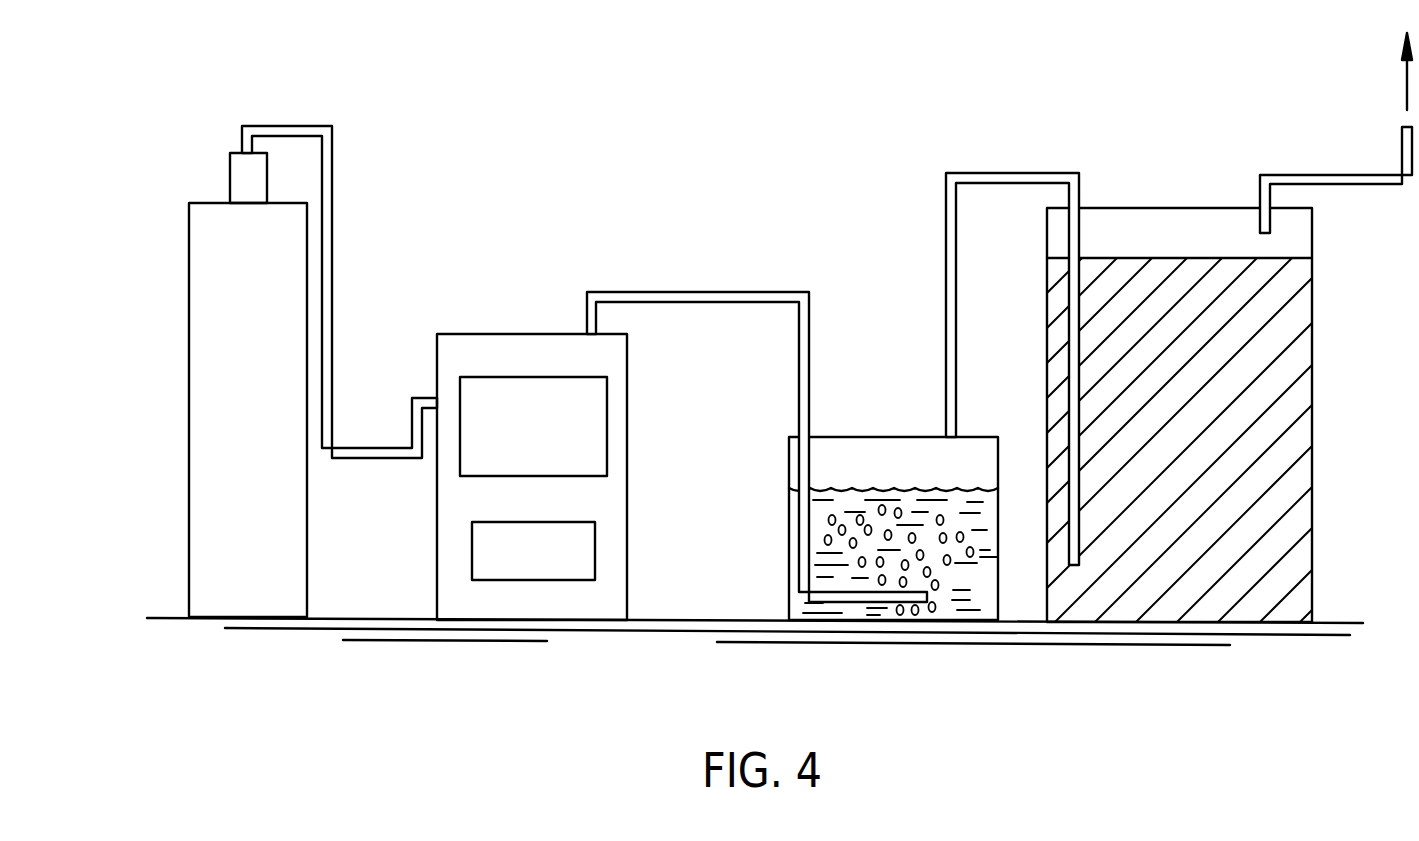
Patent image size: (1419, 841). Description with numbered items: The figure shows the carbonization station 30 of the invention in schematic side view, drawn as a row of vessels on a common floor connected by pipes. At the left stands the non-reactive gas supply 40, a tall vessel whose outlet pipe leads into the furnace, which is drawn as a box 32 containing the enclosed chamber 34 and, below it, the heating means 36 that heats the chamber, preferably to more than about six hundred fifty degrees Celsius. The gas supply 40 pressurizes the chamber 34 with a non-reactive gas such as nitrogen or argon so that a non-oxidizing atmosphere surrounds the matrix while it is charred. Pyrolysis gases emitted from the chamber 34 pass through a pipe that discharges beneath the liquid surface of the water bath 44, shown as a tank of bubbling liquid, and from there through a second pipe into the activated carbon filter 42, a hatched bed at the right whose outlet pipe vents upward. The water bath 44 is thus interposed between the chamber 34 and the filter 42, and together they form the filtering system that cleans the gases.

The carbonization station 30 is at (725, 262).
The reaction chamber 32 is at (627, 507).
The enclosed chamber 34 is at (602, 440).
The heating means 36 is at (472, 543).
The non-reactive gas supply 40 is at (190, 263).
The activated carbon filter 42 is at (1288, 368).
The water bath 44 is at (918, 436).